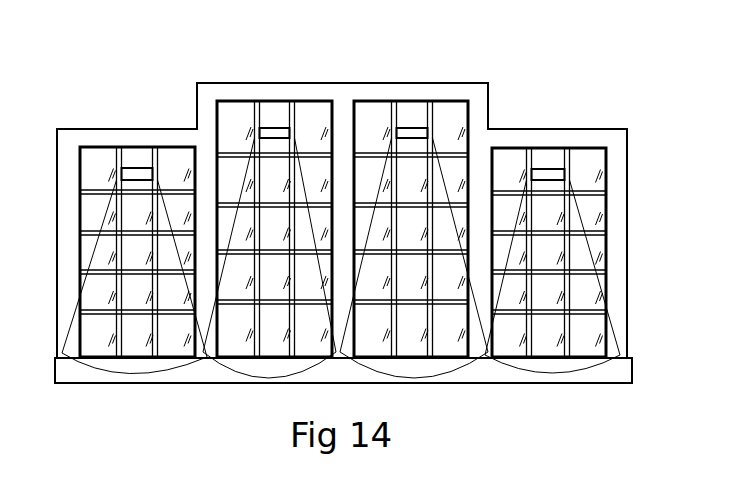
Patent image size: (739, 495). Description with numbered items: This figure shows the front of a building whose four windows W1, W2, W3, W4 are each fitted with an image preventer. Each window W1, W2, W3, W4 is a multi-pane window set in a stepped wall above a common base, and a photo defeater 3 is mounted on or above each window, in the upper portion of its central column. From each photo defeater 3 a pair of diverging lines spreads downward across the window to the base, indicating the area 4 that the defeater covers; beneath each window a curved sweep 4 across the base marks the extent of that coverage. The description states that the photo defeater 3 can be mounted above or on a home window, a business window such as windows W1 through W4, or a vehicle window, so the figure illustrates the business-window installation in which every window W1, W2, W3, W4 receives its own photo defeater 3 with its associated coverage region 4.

The window W1 is at (90, 170).
The window W2 is at (307, 110).
The window W3 is at (376, 112).
The window W4 is at (596, 162).
The photo defeater 3 is at (137, 166).
The illuminated area 4 is at (110, 375).